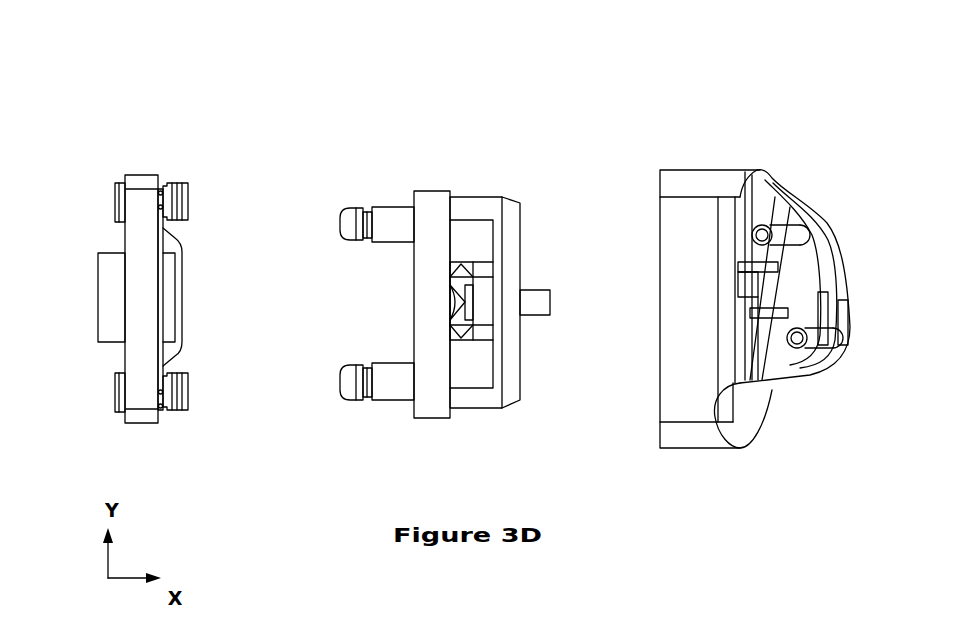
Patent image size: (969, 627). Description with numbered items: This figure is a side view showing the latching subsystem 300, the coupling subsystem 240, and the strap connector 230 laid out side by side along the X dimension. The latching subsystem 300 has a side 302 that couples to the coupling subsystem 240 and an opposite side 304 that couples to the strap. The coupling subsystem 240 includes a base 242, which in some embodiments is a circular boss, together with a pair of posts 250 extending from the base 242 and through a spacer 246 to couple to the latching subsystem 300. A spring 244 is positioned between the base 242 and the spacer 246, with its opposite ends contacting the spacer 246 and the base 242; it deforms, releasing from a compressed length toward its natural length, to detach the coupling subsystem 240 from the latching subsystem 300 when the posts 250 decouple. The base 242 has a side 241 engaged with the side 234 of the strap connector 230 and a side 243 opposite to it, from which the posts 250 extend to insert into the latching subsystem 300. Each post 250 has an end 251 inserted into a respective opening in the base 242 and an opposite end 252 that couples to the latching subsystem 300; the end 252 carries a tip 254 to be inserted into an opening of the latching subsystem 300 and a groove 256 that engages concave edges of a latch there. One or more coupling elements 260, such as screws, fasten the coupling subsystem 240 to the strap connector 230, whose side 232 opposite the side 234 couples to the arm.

The strap connector 230 is at (692, 182).
The side 232 is at (772, 425).
The side 234 is at (650, 348).
The coupling subsystem 240 is at (521, 85).
The side 241 is at (530, 353).
The base 242 is at (487, 203).
The side 243 is at (438, 353).
The spring 244 is at (450, 307).
The spacer 246 is at (437, 405).
The post 250 is at (395, 215).
The end 251 is at (402, 256).
The end 252 is at (348, 143).
The tip 254 is at (339, 200).
The groove 256 is at (368, 198).
The coupling element 260 is at (533, 303).
The latching subsystem 300 is at (148, 133).
The side 302 is at (170, 418).
The side 304 is at (113, 418).